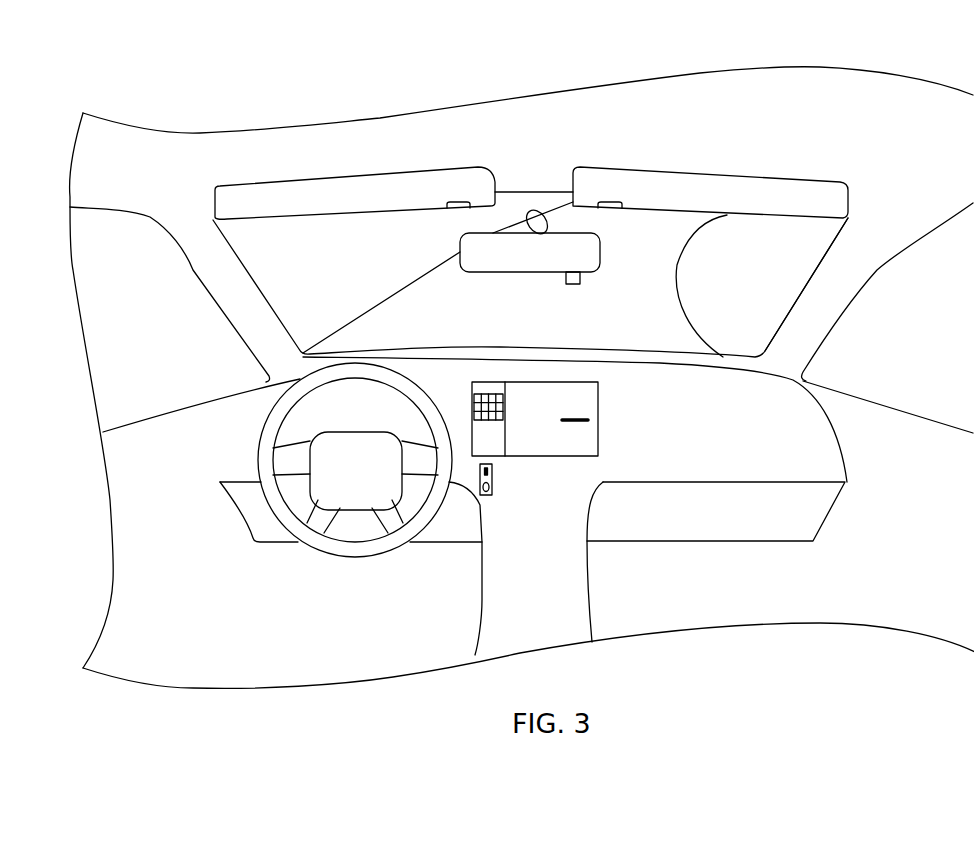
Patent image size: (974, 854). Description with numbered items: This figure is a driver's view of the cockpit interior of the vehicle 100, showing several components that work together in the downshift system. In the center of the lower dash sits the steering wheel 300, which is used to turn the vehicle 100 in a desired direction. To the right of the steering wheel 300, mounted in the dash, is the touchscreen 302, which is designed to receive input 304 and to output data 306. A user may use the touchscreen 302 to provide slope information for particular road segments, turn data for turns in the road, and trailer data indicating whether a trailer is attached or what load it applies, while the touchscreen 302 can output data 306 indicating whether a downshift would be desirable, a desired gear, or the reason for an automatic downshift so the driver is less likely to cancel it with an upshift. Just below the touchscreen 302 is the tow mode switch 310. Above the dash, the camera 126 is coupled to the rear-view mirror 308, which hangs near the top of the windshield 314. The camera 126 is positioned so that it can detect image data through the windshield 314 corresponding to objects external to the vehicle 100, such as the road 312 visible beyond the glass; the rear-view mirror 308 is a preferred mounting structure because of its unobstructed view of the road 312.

The vehicle 100 is at (153, 101).
The camera 126 is at (582, 277).
The steering wheel 300 is at (263, 433).
The touchscreen 302 is at (534, 386).
The input 304 is at (472, 395).
The output data 306 is at (588, 427).
The rear-view mirror 308 is at (460, 247).
The tow mode switch 310 is at (493, 486).
The road 312 is at (677, 280).
The windshield 314 is at (832, 238).